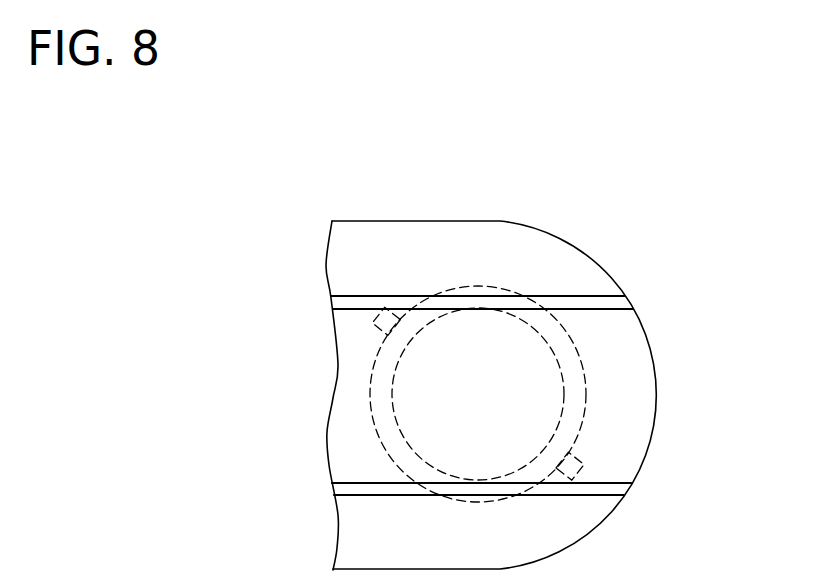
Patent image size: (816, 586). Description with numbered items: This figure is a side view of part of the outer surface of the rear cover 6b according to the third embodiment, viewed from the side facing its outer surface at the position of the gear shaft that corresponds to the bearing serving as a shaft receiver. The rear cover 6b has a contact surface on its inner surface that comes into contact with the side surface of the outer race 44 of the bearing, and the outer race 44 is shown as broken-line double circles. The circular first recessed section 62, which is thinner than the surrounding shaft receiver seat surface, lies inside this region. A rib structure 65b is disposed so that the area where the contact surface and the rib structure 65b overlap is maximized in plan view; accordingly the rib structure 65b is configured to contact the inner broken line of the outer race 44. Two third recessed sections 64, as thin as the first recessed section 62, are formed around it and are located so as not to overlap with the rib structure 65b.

The rear cover 6b is at (381, 240).
The rib structure 65b is at (612, 301).
The first recessed section 62 is at (542, 364).
The outer race 44 is at (575, 390).
The third recessed section 64 is at (373, 325).